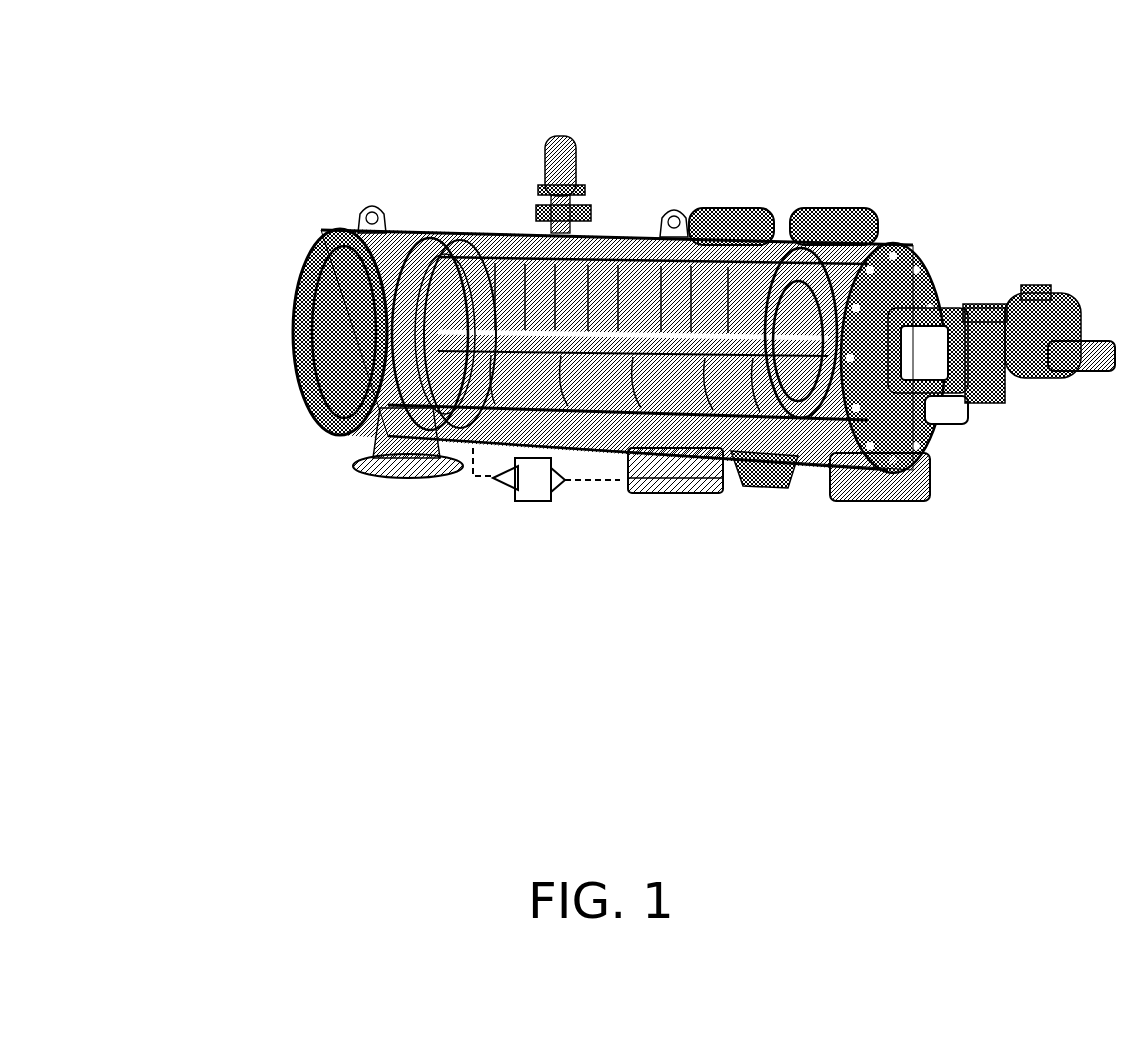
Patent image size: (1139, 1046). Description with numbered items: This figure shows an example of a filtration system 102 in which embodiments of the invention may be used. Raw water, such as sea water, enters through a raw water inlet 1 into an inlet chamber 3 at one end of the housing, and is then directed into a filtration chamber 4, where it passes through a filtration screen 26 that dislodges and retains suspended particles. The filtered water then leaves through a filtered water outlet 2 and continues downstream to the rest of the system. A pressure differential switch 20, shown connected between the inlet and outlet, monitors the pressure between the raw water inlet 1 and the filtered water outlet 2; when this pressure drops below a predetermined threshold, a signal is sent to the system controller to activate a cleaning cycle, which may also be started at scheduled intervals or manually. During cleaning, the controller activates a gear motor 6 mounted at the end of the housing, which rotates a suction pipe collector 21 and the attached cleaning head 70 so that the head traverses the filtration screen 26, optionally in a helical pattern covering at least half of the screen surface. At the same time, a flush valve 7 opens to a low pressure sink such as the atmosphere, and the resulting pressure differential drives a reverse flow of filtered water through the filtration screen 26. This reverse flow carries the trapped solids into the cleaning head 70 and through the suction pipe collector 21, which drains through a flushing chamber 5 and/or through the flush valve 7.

The raw water inlet 1 is at (387, 463).
The filtered water outlet 2 is at (652, 483).
The inlet chamber 3 is at (355, 305).
The filtration chamber 4 is at (603, 227).
The flushing chamber 5 is at (872, 207).
The gear motor 6 is at (1037, 270).
The flush valve 7 is at (843, 480).
The pressure differential switch 20 is at (525, 467).
The suction pipe collector 21 is at (517, 427).
The filtration screen 26 is at (705, 280).
The cleaning head 70 is at (705, 443).
The filtration system 102 is at (907, 647).